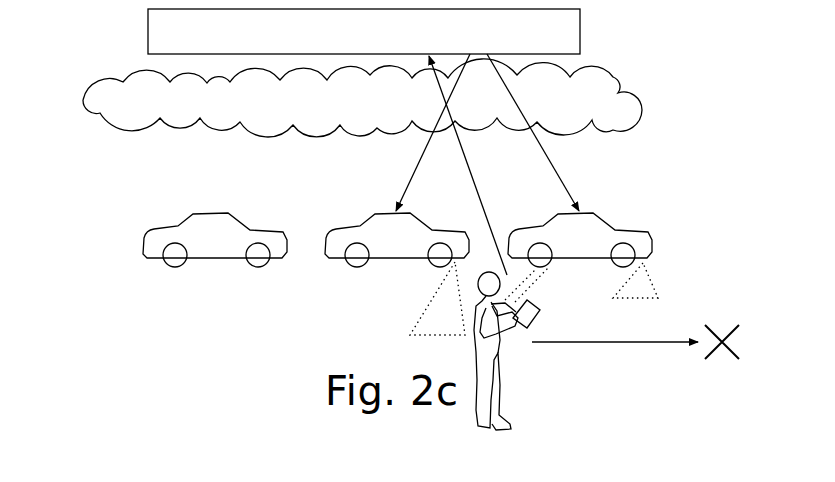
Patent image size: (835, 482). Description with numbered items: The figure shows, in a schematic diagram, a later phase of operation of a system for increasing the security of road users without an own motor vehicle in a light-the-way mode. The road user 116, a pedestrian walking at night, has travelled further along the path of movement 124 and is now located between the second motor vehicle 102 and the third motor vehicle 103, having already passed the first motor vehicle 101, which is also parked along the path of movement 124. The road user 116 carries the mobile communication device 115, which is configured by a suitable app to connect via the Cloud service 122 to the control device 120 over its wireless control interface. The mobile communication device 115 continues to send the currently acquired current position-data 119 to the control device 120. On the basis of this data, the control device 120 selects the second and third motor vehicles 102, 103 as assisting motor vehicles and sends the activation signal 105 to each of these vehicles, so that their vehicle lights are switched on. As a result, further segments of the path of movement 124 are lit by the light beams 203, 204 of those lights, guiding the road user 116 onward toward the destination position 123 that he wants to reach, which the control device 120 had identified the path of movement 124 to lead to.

The control device 120 is at (344, 42).
The Cloud service 122 is at (344, 111).
The first motor vehicle 101 is at (210, 212).
The second motor vehicle 102 is at (380, 212).
The third motor vehicle 103 is at (597, 220).
The activation signal 105 is at (423, 162).
The current position-data 119 is at (471, 166).
The road user 116 is at (503, 360).
The mobile communication device 115 is at (541, 310).
The light beam 203 is at (523, 272).
The light beam 204 is at (648, 268).
The path of movement 124 is at (618, 345).
The destination position 123 is at (727, 322).